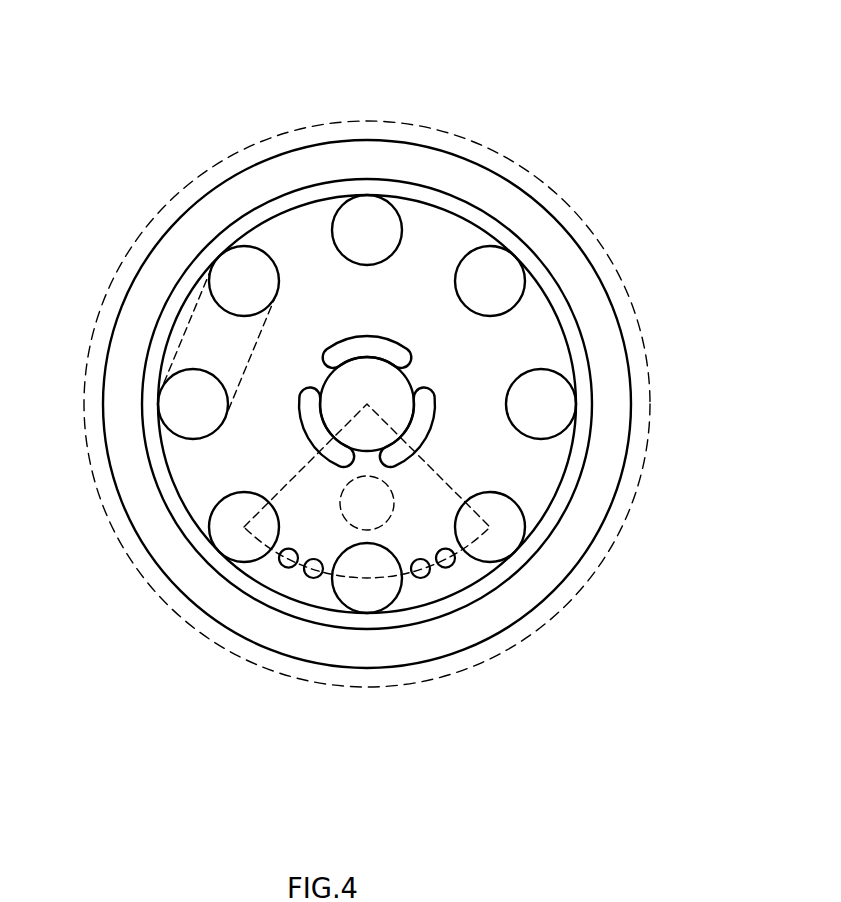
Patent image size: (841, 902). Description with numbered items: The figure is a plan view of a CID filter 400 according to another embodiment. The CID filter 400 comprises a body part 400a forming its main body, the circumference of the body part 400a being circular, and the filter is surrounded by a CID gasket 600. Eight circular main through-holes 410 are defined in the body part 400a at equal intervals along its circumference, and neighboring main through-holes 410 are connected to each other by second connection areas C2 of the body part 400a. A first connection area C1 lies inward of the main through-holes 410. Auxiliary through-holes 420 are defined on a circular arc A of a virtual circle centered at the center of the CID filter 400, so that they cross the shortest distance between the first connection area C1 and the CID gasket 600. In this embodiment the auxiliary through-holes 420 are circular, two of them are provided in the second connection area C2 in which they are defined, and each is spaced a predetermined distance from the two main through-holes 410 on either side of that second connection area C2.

The CID filter 400 is at (447, 80).
The body part 400a is at (480, 178).
The main through-holes 410 is at (373, 219).
The auxiliary through-hole 420 is at (288, 560).
The CID gasket 600 is at (587, 221).
The first connection area C1 is at (398, 495).
The second connection area C2 is at (214, 348).
The circular arc A is at (375, 580).